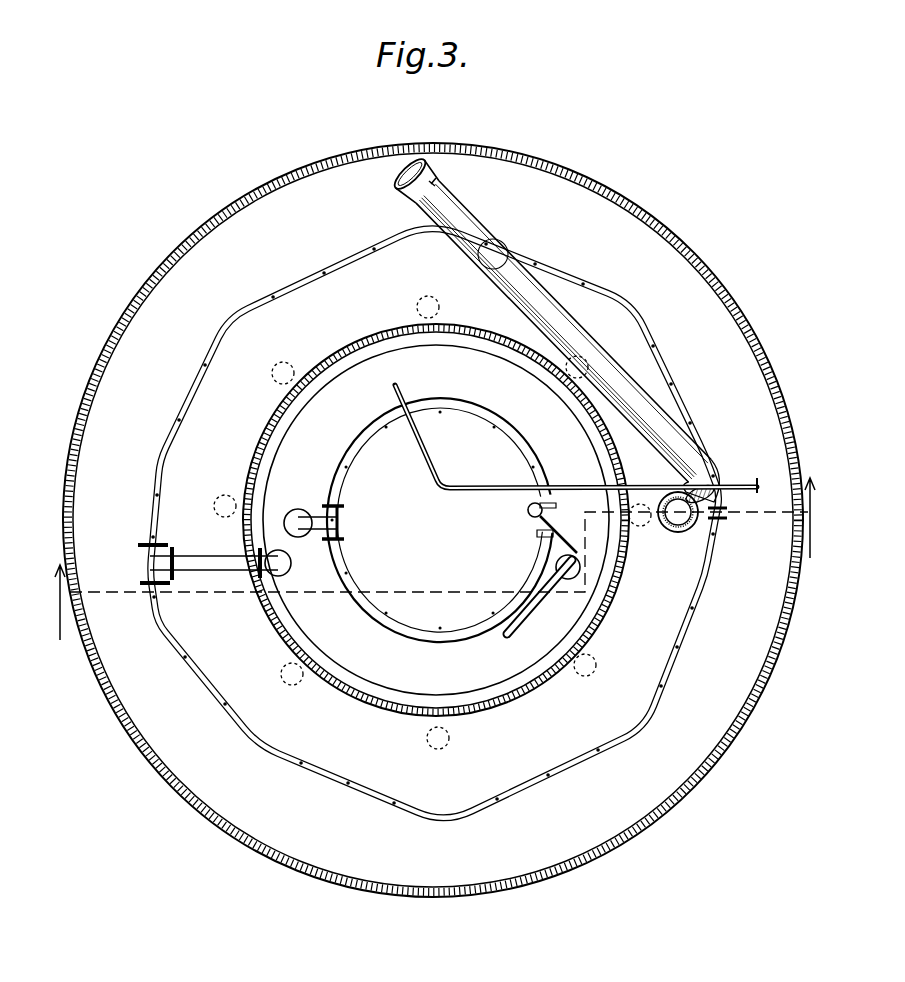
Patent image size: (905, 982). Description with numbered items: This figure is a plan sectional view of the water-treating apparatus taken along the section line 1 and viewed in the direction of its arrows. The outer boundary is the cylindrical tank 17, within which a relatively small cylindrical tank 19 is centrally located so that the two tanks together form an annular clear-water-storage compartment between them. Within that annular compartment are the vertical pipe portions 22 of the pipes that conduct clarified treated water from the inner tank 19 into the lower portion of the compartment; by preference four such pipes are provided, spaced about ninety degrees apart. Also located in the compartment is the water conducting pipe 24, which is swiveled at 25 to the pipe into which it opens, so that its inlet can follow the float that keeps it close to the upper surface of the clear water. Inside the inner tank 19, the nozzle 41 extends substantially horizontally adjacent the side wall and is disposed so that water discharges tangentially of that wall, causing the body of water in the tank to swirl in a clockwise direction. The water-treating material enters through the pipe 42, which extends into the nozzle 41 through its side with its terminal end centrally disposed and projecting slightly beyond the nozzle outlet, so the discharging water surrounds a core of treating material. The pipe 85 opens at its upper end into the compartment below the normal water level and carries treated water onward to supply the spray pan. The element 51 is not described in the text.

The section line 1- 1 is at (434, 559).
The cylindrical tank 17 is at (127, 325).
The cylindrical tank 19 is at (263, 438).
The vertical pipe portions 22 is at (291, 364).
The water conducting pipe 24 is at (654, 410).
The swivel 25 is at (688, 480).
The nozzle 41 is at (516, 627).
The pipe 42 is at (579, 554).
The collar ring 51 is at (688, 537).
The pipe 85 is at (586, 439).